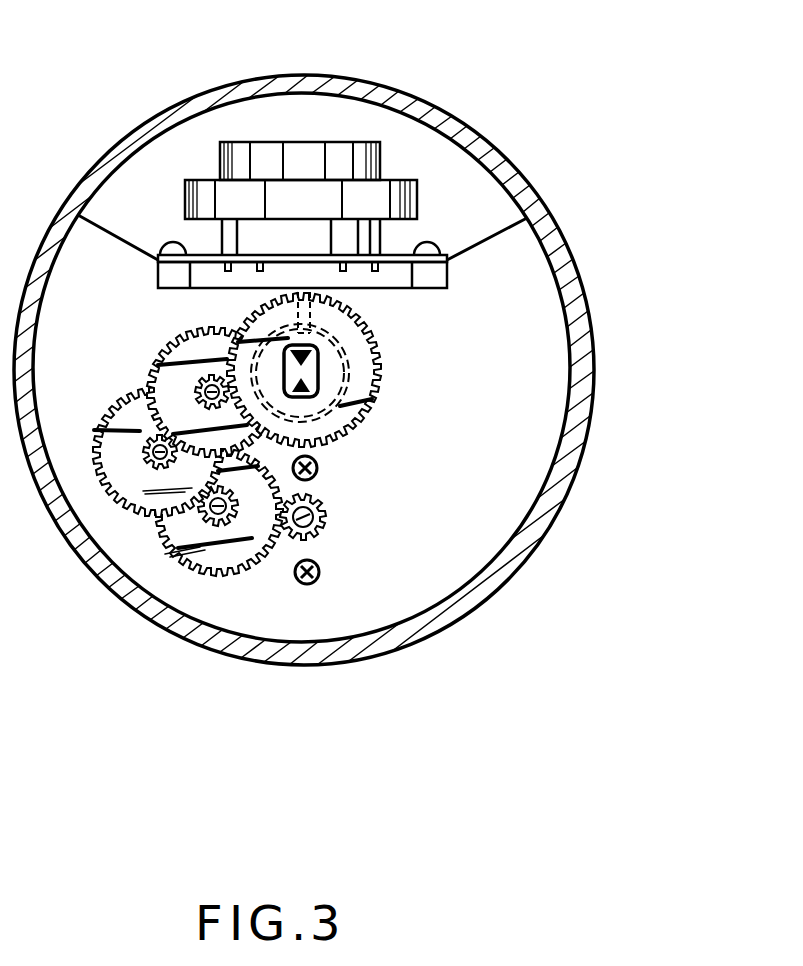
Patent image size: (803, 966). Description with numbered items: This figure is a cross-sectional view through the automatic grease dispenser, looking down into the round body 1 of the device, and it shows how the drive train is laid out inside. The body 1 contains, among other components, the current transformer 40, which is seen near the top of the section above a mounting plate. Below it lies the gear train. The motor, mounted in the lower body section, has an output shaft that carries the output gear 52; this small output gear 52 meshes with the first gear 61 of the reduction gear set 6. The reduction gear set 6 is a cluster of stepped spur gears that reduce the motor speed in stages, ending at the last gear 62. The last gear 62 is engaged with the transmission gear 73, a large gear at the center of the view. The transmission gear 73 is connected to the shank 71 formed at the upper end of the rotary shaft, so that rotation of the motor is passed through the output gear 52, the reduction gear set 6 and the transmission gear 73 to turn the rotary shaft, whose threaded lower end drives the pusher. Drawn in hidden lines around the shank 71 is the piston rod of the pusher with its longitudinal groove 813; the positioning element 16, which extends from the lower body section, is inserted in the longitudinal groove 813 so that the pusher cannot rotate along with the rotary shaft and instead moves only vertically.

The body 1 is at (557, 259).
The current transformer 40 is at (330, 158).
The positioning element 16 is at (316, 316).
The reduction gear set 6 is at (113, 402).
The last gear 62 is at (208, 385).
The first gear 61 is at (236, 560).
The transmission gear 73 is at (347, 432).
The longitudinal groove 813 is at (347, 358).
The shank 71 is at (318, 378).
The output gear 52 is at (328, 508).